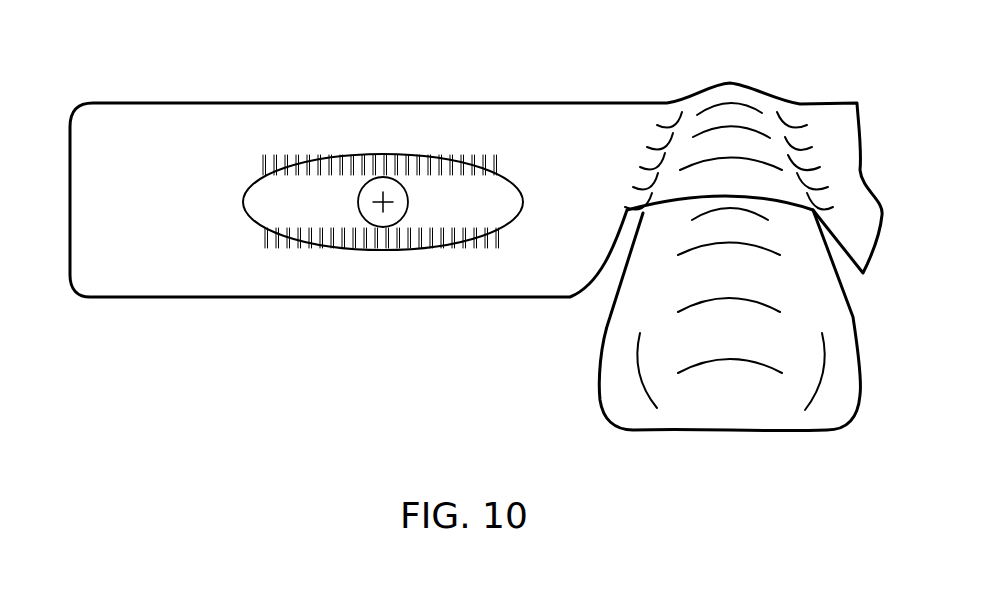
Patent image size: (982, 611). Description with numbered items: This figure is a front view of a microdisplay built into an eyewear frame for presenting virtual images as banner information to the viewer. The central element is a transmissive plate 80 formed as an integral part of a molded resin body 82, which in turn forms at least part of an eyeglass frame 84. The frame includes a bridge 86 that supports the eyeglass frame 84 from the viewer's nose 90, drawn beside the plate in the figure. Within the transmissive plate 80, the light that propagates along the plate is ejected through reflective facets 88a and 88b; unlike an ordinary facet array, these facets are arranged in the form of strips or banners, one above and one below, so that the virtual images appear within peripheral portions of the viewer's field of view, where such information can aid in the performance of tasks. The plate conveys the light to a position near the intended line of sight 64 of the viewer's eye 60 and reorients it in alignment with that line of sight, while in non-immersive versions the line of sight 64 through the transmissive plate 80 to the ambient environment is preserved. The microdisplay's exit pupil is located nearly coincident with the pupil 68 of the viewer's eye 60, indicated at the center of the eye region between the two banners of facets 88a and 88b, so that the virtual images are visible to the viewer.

The viewer's eye 60 is at (243, 201).
The intended line of sight 64 is at (378, 203).
The pupil of the viewer's eye 68 is at (408, 201).
The transmissive plate 80 is at (167, 223).
The molded resin body 82 is at (160, 122).
The eyeglass frame 84 is at (284, 100).
The bridge 86 is at (712, 122).
The reflective facets 88a is at (485, 145).
The reflective facets 88b is at (255, 242).
The viewer's nose 90 is at (622, 320).